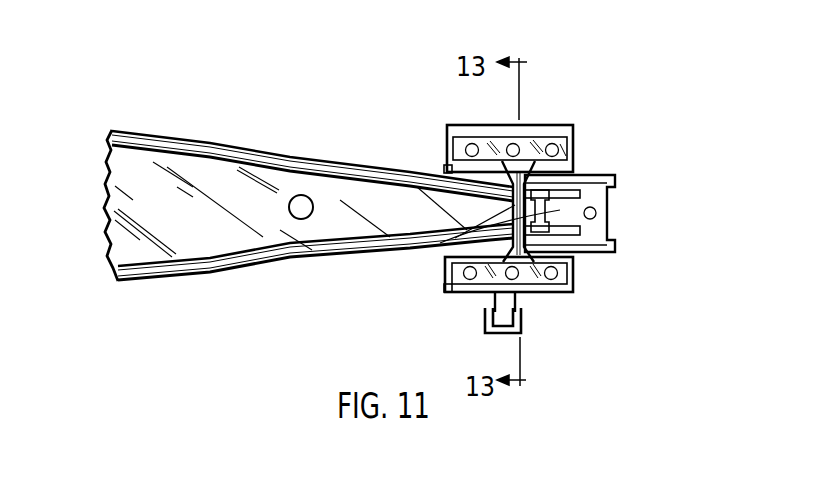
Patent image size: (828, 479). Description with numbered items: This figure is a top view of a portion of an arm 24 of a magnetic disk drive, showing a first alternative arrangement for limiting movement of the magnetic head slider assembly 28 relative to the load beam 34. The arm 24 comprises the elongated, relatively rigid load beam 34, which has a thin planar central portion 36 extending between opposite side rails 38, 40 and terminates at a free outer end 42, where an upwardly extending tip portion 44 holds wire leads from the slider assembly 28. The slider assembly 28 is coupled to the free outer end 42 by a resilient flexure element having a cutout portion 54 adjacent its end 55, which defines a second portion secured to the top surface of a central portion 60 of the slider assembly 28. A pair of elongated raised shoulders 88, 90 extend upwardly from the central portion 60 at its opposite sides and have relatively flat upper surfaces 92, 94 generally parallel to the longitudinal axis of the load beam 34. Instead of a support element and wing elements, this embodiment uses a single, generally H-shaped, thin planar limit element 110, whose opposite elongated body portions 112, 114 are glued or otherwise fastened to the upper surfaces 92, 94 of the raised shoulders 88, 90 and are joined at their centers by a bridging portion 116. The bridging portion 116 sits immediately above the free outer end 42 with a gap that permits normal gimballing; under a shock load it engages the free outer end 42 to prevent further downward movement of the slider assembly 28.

The arm 24 is at (221, 143).
The magnetic head slider assembly 28 is at (477, 125).
The load beam 34 is at (151, 136).
The thin planar central portion 36 is at (106, 218).
The side rail 38 is at (233, 270).
The side rail 40 is at (282, 158).
The free outer end 42 is at (455, 238).
The tip portion 44 is at (565, 230).
The cutout portion 54 is at (577, 238).
The end 55 is at (613, 212).
The central portion 60 is at (447, 166).
The raised shoulder 88 is at (543, 292).
The raised shoulder 90 is at (531, 126).
The upper surface 92 is at (448, 282).
The upper surface 94 is at (573, 130).
The limit element 110 is at (532, 148).
The elongated body portion 112 is at (572, 288).
The elongated body portion 114 is at (563, 156).
The bridging portion 116 is at (575, 180).